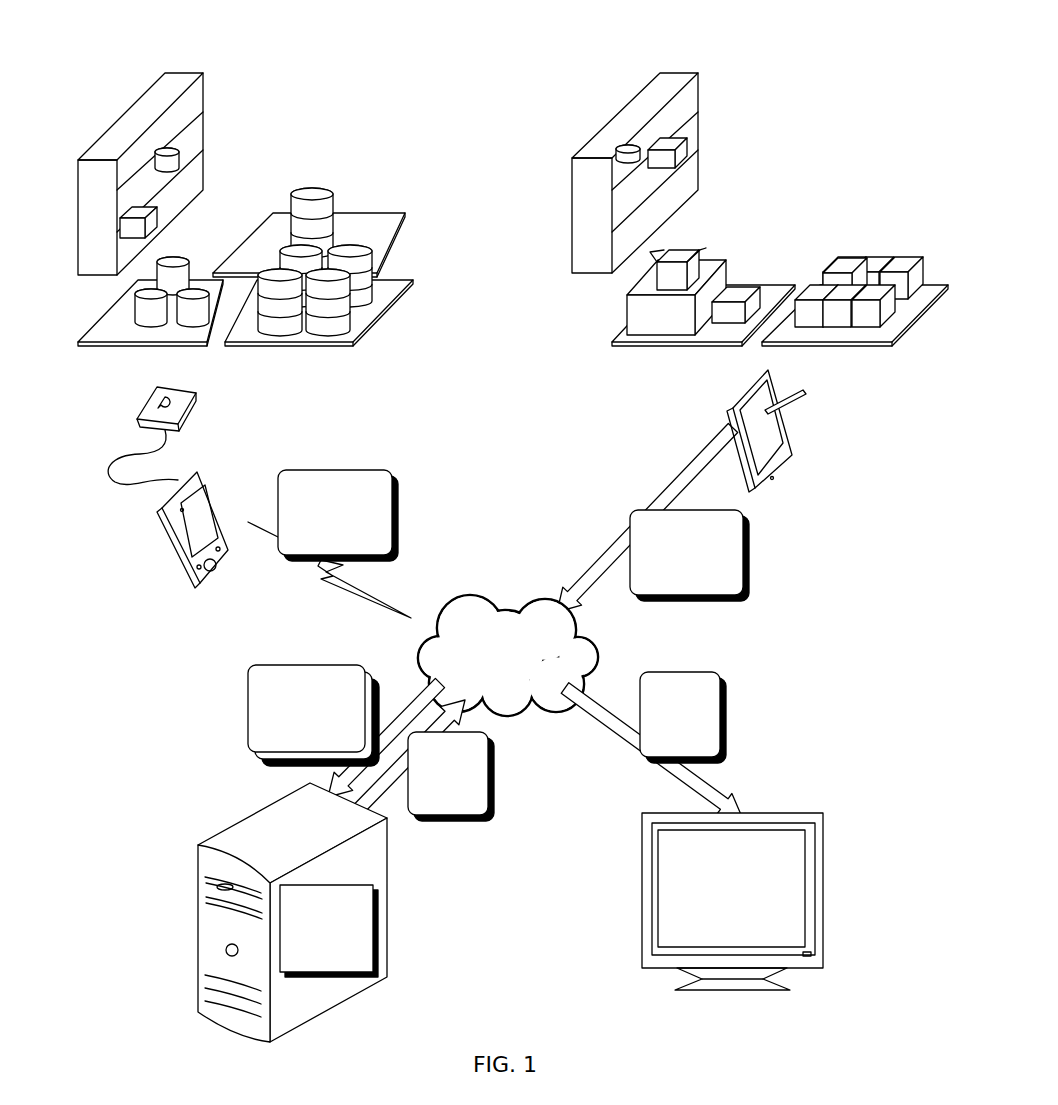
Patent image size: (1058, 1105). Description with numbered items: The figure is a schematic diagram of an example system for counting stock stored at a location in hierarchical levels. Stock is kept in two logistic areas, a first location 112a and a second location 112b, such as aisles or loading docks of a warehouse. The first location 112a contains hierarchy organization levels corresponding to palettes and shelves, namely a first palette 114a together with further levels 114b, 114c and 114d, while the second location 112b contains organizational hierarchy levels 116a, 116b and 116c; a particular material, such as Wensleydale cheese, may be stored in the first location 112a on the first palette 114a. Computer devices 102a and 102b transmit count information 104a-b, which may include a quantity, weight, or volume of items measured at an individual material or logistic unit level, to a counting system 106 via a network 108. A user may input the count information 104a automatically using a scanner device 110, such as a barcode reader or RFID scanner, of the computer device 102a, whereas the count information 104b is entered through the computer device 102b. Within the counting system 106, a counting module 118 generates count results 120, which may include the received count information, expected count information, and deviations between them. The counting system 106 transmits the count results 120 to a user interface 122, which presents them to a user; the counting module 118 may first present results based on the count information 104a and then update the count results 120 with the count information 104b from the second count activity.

The computer device 102a is at (164, 547).
The computer device 102b is at (721, 425).
The count information 104a is at (329, 544).
The count information 104b is at (653, 518).
The count information 104a-b is at (346, 731).
The counting system 106 is at (292, 912).
The network 108 is at (508, 655).
The scanner device 110 is at (200, 403).
The first location 112a is at (270, 161).
The second location 112b is at (765, 227).
The first palette 114a is at (375, 214).
The hierarchy organization level 114b is at (288, 345).
The hierarchy organization level 114c is at (124, 345).
The hierarchy organization level 114d is at (130, 97).
The organizational hierarchy level 116a is at (834, 345).
The organizational hierarchy level 116b is at (670, 345).
The organizational hierarchy level 116c is at (612, 113).
The counting module 118 is at (329, 931).
The count results 120 is at (569, 805).
The user interface 122 is at (641, 899).